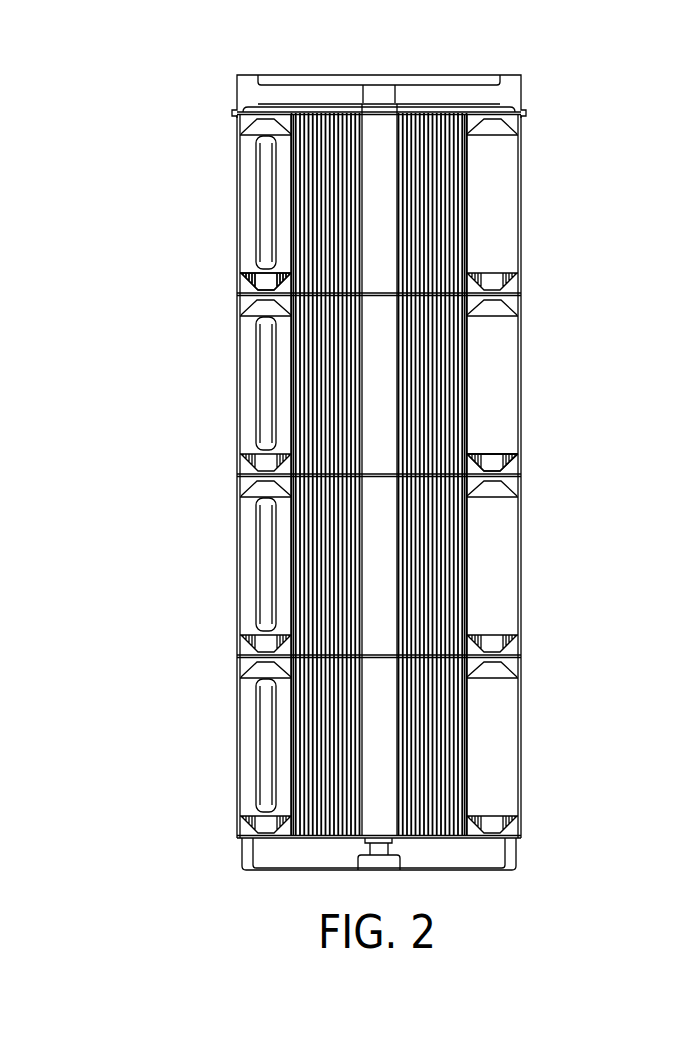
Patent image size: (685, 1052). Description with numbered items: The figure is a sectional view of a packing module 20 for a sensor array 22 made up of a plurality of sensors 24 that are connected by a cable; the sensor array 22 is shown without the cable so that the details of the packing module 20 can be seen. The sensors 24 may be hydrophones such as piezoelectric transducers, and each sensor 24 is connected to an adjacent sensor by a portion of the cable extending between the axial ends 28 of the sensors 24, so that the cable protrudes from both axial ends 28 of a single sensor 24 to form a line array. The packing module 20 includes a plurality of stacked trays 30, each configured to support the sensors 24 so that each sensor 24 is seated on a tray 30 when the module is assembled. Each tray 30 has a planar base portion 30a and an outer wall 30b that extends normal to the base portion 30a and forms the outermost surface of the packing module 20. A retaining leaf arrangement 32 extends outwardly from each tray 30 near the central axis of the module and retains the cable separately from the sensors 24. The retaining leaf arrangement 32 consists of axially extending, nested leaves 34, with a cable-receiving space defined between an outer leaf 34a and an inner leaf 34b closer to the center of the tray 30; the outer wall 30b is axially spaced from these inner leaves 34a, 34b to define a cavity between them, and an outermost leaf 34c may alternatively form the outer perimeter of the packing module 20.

The packing module 20 is at (206, 113).
The sensor array 22 is at (256, 237).
The sensors 24 is at (262, 383).
The axial ends 28 is at (233, 278).
The tray 30 is at (520, 292).
The base portion 30a is at (519, 655).
The outer wall 30b is at (519, 531).
The retaining leaf arrangement 32 is at (445, 201).
The leaves 34 is at (440, 245).
The outer leaf 34a is at (467, 466).
The inner leaf 34b is at (562, 453).
The outermost leaf 34c is at (519, 358).